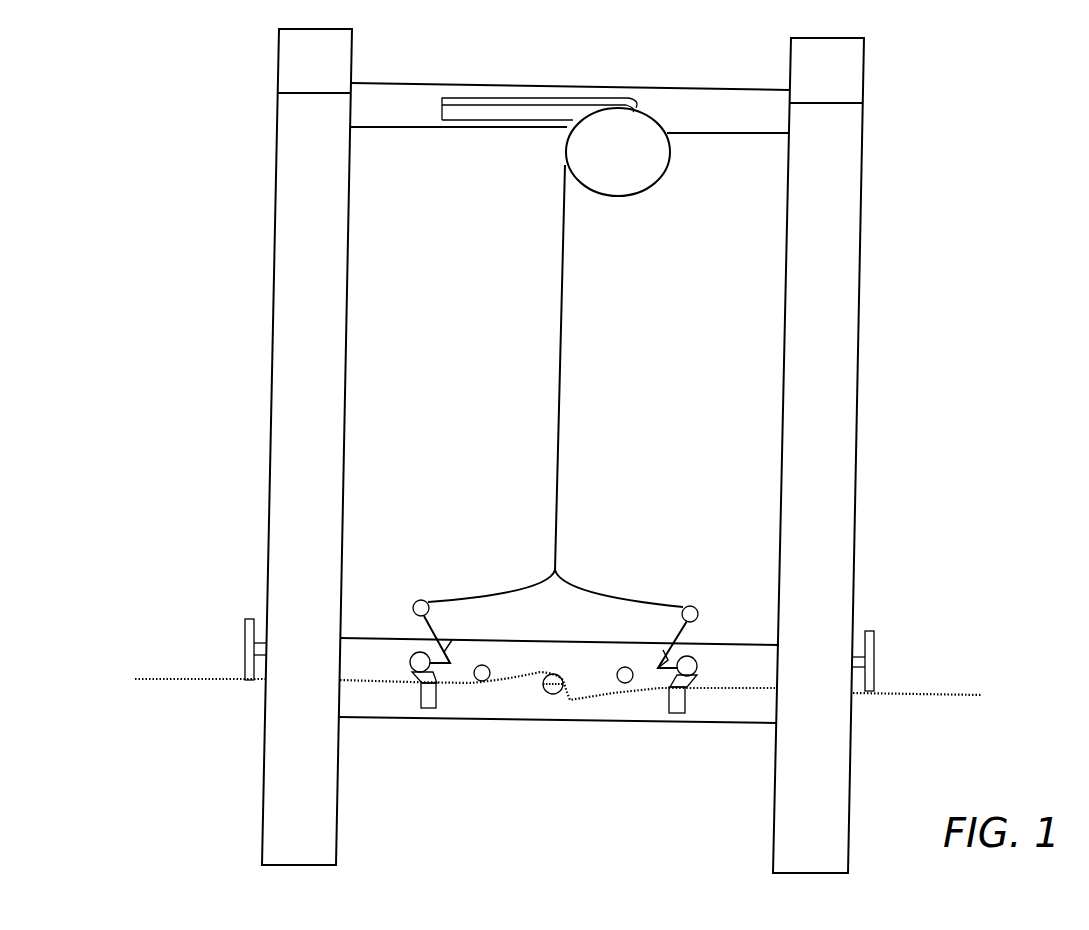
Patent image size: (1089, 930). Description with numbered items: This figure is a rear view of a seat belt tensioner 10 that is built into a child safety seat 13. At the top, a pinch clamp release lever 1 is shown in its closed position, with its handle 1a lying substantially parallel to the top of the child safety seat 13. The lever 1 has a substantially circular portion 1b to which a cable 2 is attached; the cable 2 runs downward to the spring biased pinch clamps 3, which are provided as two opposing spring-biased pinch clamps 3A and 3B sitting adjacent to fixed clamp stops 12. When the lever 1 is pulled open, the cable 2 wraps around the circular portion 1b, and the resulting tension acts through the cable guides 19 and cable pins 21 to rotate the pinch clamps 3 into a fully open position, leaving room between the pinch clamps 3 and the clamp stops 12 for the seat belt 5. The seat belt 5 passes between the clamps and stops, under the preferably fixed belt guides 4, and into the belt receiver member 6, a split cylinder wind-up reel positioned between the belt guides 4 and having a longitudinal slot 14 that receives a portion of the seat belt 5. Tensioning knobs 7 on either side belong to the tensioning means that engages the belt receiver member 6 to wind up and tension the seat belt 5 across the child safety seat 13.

The seat belt tensioner 10 is at (562, 451).
The pinch clamp release lever 1 is at (572, 136).
The handle 1a is at (488, 126).
The substantially circular portion 1b is at (650, 190).
The cable 2 is at (560, 385).
The child safety seat 13 is at (860, 267).
The cable guides 19 is at (419, 600).
The cable pins 21 is at (448, 648).
The spring biased pinch clamps 3 is at (554, 648).
The first spring-biased pinch clamp 3A is at (413, 655).
The second spring-biased pinch clamp 3B is at (697, 656).
The clamp stops 12 is at (415, 690).
The belt guides 4 is at (482, 665).
The longitudinal slot 14 is at (574, 684).
The belt receiver member 6 is at (540, 691).
The seat belt 5 is at (165, 677).
The tensioning knob 7 is at (250, 619).